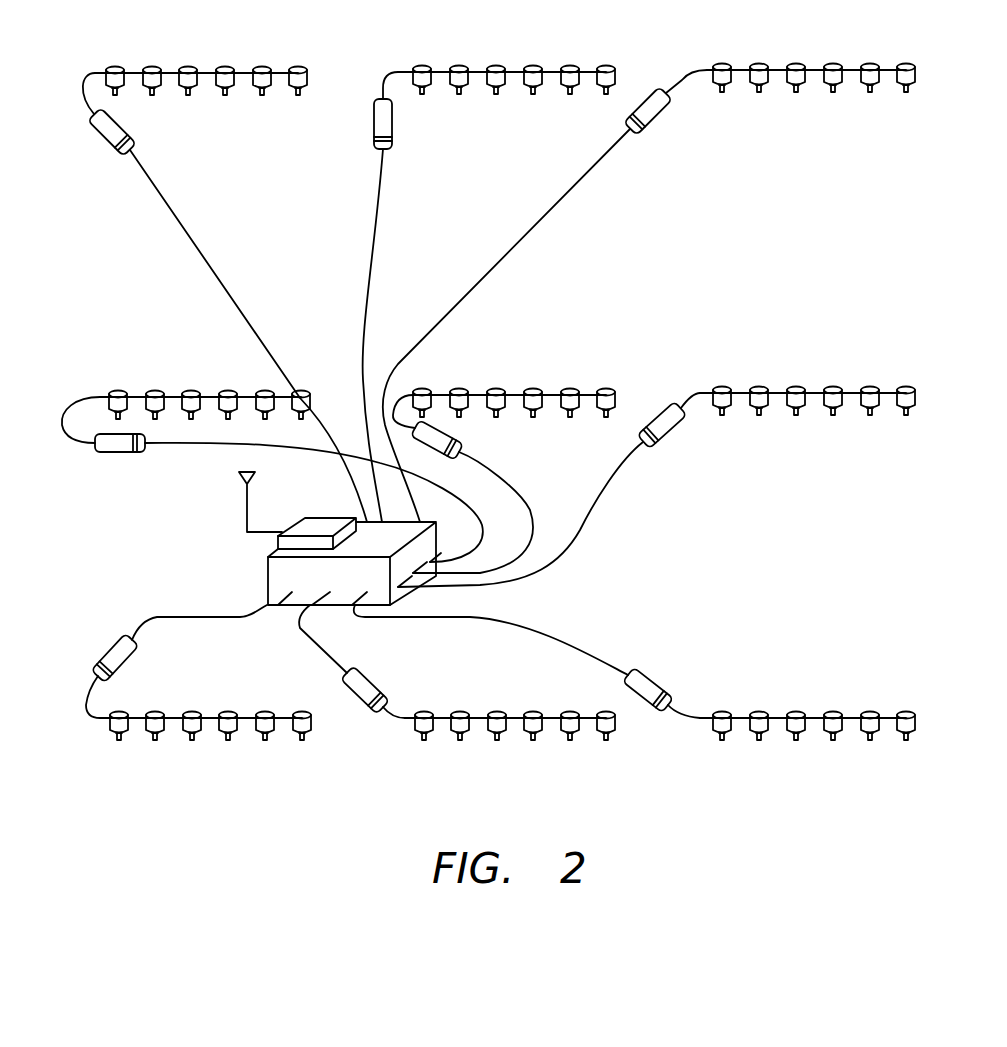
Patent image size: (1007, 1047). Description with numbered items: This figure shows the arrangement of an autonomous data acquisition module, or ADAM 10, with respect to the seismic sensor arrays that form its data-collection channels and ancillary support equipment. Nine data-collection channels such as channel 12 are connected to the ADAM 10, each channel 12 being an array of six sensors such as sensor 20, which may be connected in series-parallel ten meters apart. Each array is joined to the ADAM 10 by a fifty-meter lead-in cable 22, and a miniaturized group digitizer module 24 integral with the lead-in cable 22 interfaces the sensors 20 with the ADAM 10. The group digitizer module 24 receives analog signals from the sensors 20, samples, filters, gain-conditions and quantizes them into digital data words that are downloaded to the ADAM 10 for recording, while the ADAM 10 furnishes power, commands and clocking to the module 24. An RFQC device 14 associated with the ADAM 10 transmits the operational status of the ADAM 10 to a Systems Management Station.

The autonomous data acquisition module 10 is at (268, 578).
The data-collection channel 12 is at (303, 35).
The RFQC device 14 is at (316, 521).
The sensor 20 is at (830, 64).
The lead-in cable 22 is at (551, 210).
The group digitizer module 24 is at (657, 125).